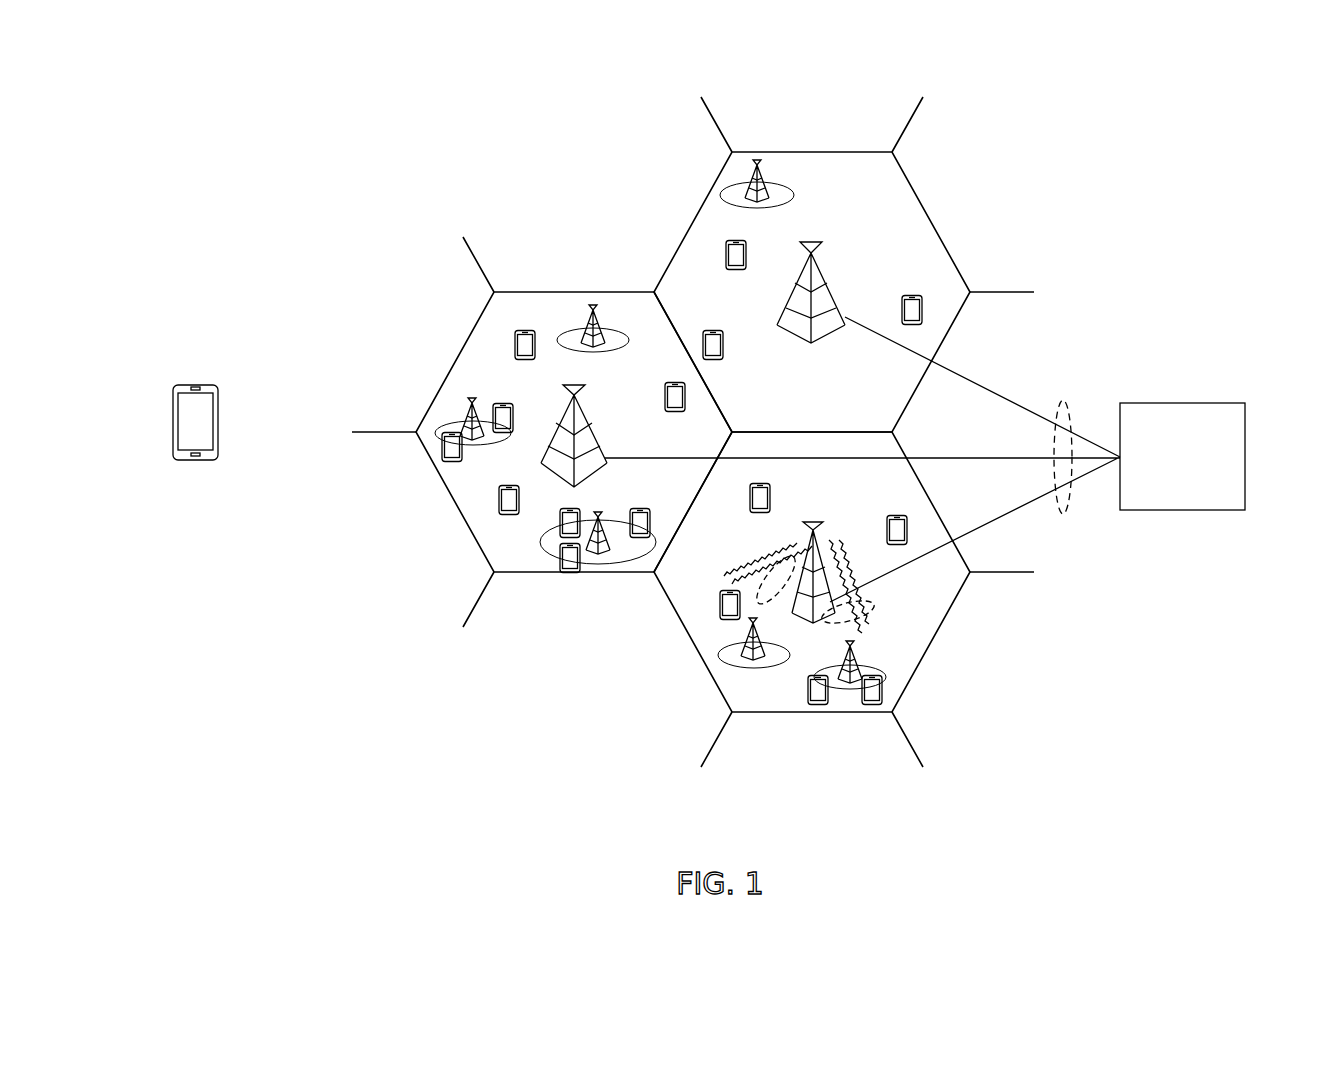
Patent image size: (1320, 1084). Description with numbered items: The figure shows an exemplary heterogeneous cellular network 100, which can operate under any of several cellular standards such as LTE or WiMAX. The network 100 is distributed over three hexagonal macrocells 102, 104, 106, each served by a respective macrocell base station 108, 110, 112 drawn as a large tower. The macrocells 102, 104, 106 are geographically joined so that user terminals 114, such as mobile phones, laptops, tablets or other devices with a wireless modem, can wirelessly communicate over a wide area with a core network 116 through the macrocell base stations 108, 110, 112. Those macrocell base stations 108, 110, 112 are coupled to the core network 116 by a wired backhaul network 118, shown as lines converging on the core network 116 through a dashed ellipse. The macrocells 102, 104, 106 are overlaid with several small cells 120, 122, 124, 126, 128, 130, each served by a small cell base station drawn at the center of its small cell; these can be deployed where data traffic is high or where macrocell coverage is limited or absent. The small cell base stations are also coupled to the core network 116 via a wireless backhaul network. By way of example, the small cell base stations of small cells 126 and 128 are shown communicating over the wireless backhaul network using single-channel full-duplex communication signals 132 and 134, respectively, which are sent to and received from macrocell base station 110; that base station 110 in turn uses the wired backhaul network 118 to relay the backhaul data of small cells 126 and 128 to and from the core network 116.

The heterogeneous cellular network 100 is at (285, 796).
The macrocell 102 is at (447, 493).
The macrocell 104 is at (937, 637).
The macrocell 106 is at (925, 215).
The macrocell base station 108 is at (604, 437).
The macrocell base station 110 is at (822, 528).
The macrocell base station 112 is at (837, 300).
The user terminal 114 is at (193, 388).
The core network 116 is at (1182, 456).
The wired backhaul network 118 is at (1063, 400).
The small cell 120 is at (578, 328).
The small cell 122 is at (448, 420).
The small cell 124 is at (595, 556).
The small cell 126 is at (720, 655).
The small cell 128 is at (842, 690).
The small cell 130 is at (722, 188).
The single-channel full-duplex communication signals 132 is at (757, 560).
The single-channel full-duplex communication signals 134 is at (873, 612).